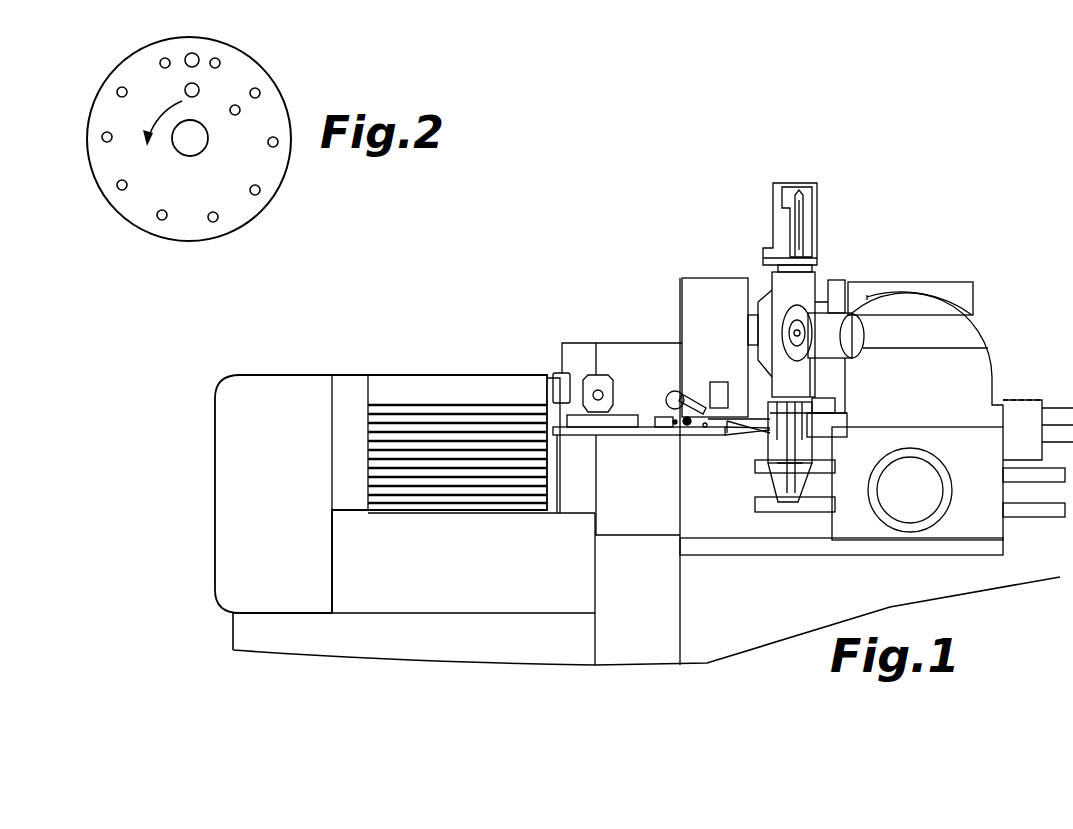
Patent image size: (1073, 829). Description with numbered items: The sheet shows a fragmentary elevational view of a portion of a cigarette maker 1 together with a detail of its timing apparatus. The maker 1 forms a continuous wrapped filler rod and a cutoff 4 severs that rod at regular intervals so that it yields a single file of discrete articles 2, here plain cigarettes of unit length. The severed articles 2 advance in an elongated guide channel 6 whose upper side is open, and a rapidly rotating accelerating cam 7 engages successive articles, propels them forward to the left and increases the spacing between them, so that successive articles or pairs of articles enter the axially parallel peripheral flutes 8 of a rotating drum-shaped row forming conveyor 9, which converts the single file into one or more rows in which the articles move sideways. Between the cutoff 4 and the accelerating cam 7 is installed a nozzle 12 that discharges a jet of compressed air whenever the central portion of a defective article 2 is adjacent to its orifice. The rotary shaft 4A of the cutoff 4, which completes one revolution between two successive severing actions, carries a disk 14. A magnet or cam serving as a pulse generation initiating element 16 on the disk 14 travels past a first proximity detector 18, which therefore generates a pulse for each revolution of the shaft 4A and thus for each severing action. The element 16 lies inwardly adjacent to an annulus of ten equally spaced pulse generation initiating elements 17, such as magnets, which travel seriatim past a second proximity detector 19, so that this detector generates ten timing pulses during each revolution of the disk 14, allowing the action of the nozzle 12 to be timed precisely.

In FIG. 1, the maker 1 is at (914, 265).
In FIG. 1, the articles 2 is at (662, 418).
In FIG. 1, the cutoff 4 is at (805, 382).
In FIG. 2, the shaft 4A is at (191, 148).
In FIG. 1, the guide channel 6 is at (663, 434).
In FIG. 1, the accelerating cam 7 is at (604, 376).
In FIG. 1, the peripheral flutes 8 is at (377, 437).
In FIG. 1, the row forming conveyor 9 is at (355, 473).
In FIG. 1, the nozzle 12 is at (689, 427).
In FIG. 2, the disk 14 is at (242, 228).
In FIG. 2, the pulse generation initiating element 16 is at (236, 116).
In FIG. 2, the pulse generation initiating elements 17 is at (161, 210).
In FIG. 2, the first proximity detector 18 is at (184, 90).
In FIG. 2, the second proximity detector 19 is at (197, 54).